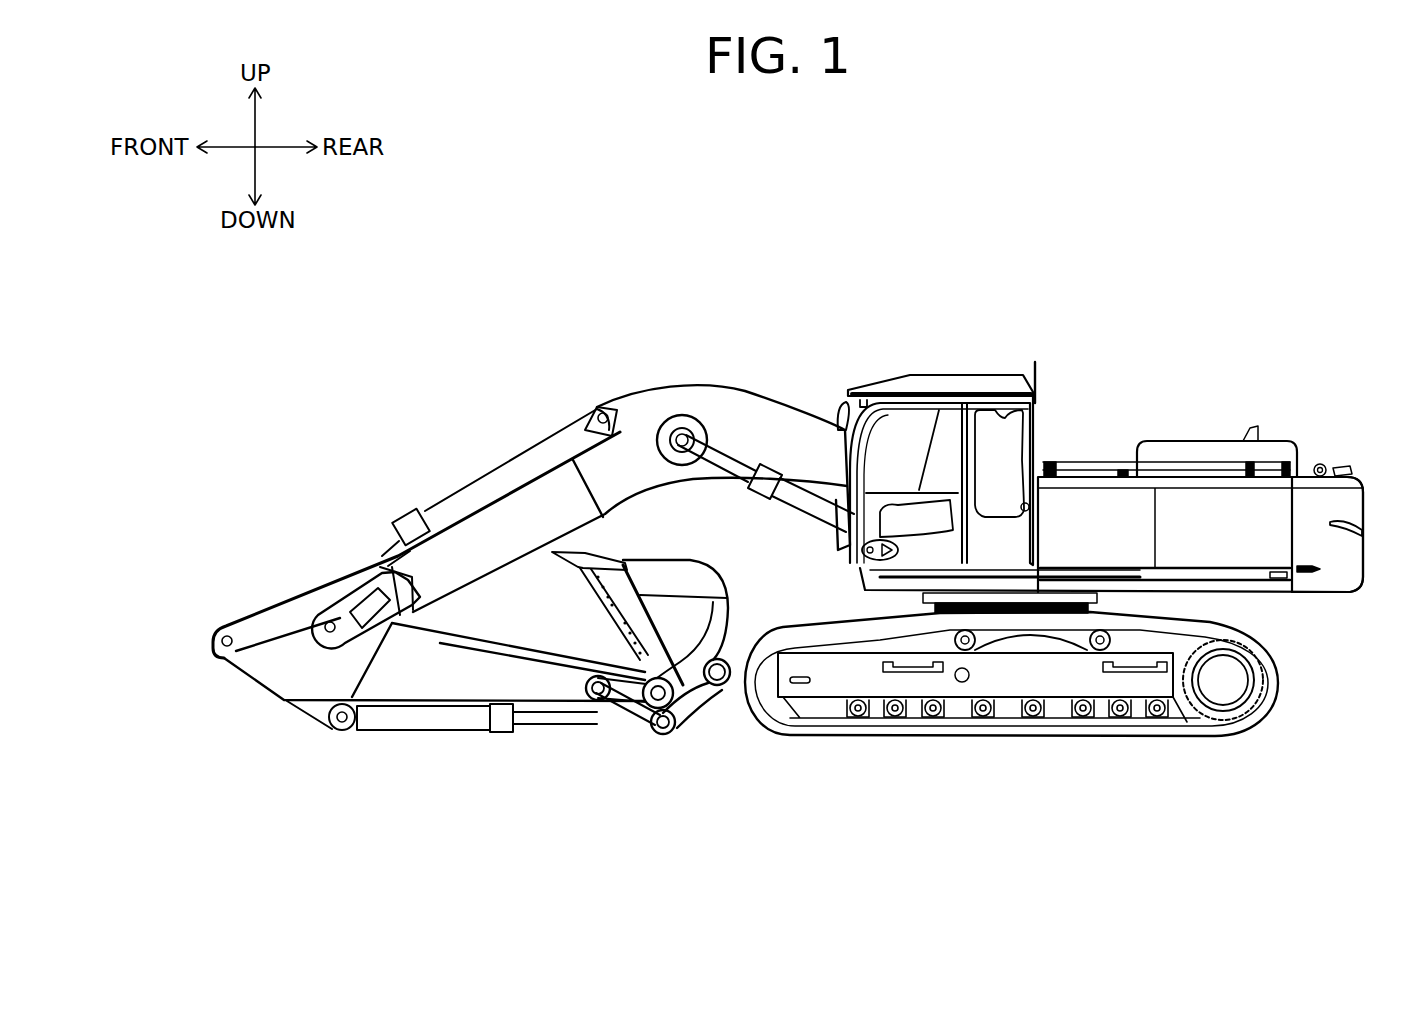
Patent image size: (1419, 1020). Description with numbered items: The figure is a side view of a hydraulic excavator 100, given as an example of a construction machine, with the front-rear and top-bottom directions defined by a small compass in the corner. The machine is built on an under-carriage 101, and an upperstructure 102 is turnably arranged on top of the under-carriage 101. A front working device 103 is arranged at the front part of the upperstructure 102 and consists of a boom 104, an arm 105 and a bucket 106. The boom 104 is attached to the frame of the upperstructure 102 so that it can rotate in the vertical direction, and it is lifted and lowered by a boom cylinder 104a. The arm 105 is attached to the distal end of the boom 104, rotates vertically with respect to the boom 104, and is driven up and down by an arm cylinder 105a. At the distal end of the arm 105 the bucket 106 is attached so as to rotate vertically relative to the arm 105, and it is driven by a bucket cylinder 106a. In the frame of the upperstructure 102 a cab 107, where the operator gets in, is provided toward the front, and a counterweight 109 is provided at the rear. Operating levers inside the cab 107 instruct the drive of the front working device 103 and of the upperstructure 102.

The hydraulic excavator 100 is at (1313, 402).
The under-carriage 101 is at (907, 751).
The upperstructure 102 is at (1077, 418).
The front working device 103 is at (535, 355).
The boom 104 is at (750, 410).
The boom cylinder 104a is at (797, 503).
The arm 105 is at (415, 673).
The arm cylinder 105a is at (458, 502).
The bucket 106 is at (687, 633).
The bucket cylinder 106a is at (458, 718).
The cab 107 is at (948, 393).
The counterweight 109 is at (1335, 573).